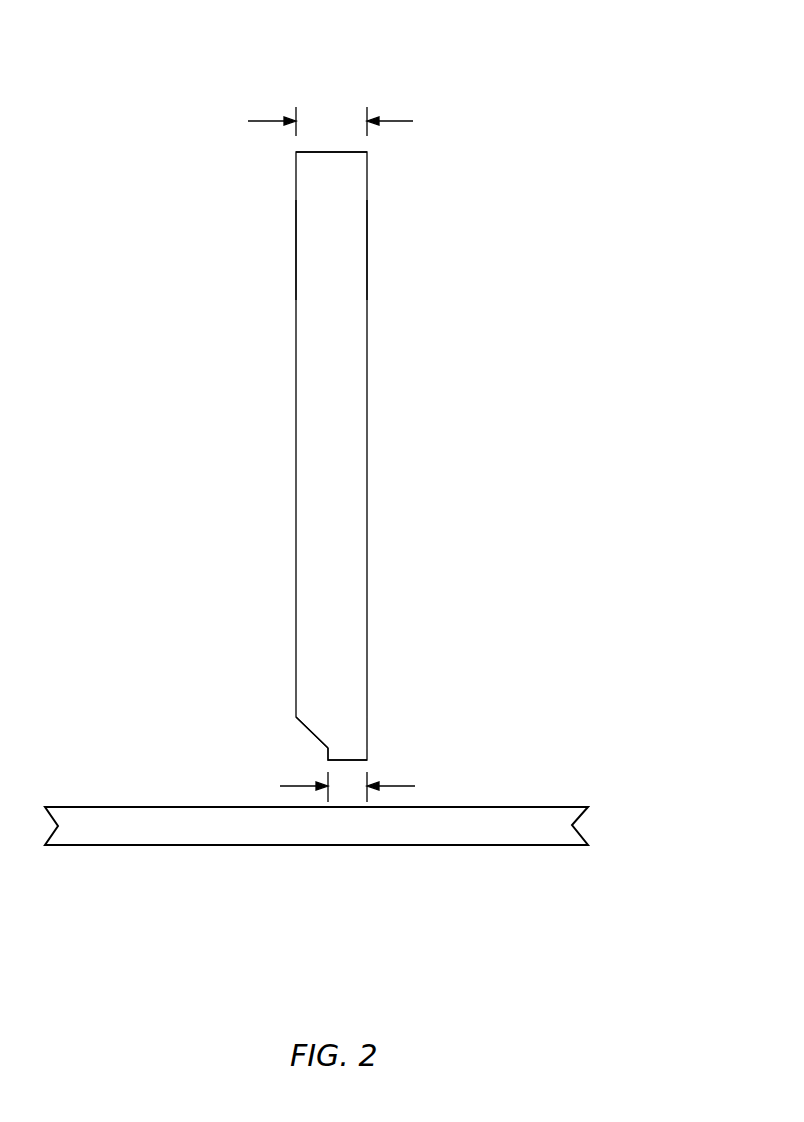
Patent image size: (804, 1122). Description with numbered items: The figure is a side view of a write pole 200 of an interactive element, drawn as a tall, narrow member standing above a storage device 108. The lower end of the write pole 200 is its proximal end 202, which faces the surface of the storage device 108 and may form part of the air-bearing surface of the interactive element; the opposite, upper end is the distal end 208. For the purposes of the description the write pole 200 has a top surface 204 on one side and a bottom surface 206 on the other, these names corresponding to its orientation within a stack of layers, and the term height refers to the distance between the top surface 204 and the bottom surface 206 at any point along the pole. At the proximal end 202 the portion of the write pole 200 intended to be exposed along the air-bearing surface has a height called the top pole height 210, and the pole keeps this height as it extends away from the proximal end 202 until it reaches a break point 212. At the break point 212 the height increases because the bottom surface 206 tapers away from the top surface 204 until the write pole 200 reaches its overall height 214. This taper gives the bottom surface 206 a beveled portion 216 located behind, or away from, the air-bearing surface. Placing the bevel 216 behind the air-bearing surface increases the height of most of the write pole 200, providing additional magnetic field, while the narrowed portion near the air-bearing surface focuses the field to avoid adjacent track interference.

The storage device 108 is at (125, 807).
The write pole 200 is at (349, 392).
The proximal end 202 is at (315, 772).
The top surface 204 is at (367, 252).
The bottom surface 206 is at (296, 243).
The distal end 208 is at (361, 82).
The top pole height 210 is at (397, 786).
The break point 212 is at (327, 757).
The overall height 214 is at (262, 121).
The beveled portion 216 is at (315, 732).